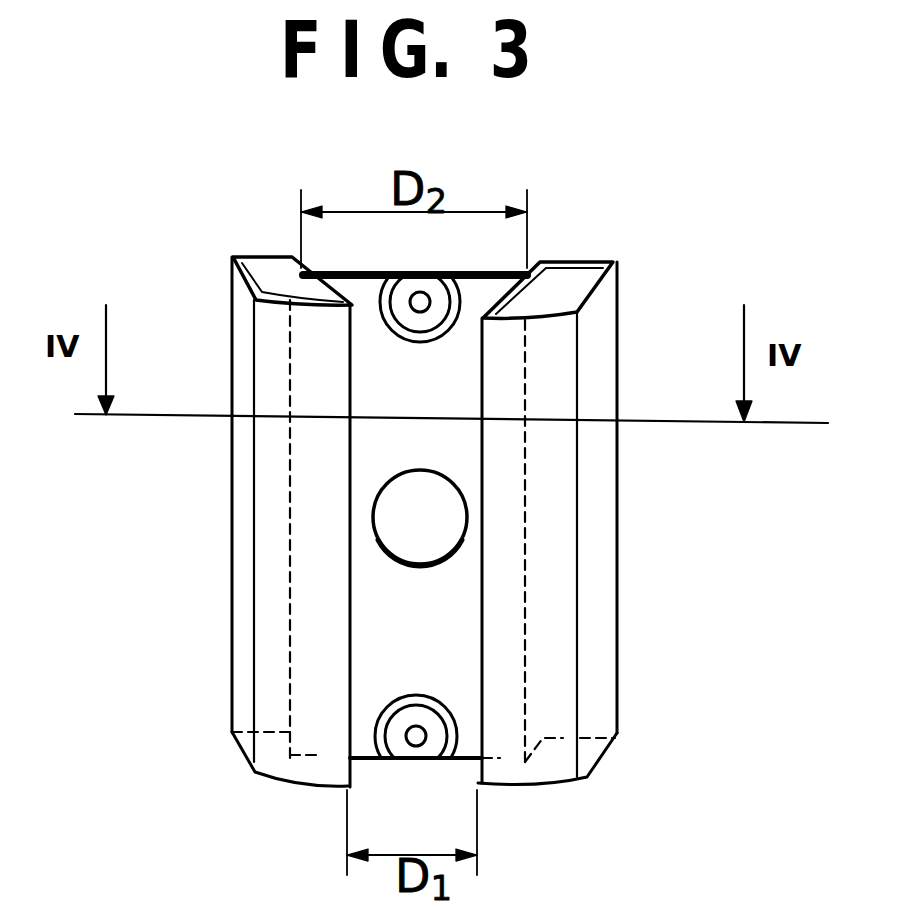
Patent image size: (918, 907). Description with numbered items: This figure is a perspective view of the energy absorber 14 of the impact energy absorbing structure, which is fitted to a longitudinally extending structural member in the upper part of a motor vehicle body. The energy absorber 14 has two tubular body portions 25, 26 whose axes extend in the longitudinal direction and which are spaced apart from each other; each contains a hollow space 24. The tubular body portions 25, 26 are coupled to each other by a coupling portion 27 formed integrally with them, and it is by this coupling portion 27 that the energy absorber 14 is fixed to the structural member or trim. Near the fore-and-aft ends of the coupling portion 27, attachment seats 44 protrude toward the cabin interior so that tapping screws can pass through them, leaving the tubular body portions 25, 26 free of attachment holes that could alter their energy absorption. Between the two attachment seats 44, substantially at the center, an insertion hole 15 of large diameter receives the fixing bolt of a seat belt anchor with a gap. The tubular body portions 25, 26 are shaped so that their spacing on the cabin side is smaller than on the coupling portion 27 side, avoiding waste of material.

The energy absorber 14 is at (617, 250).
The insertion hole 15 is at (468, 538).
The hollow spaces 24 is at (258, 258).
The tubular body portion 25 is at (268, 510).
The tubular body portion 26 is at (555, 515).
The coupling portion 27 is at (445, 385).
The attachment seats 44 is at (403, 322).